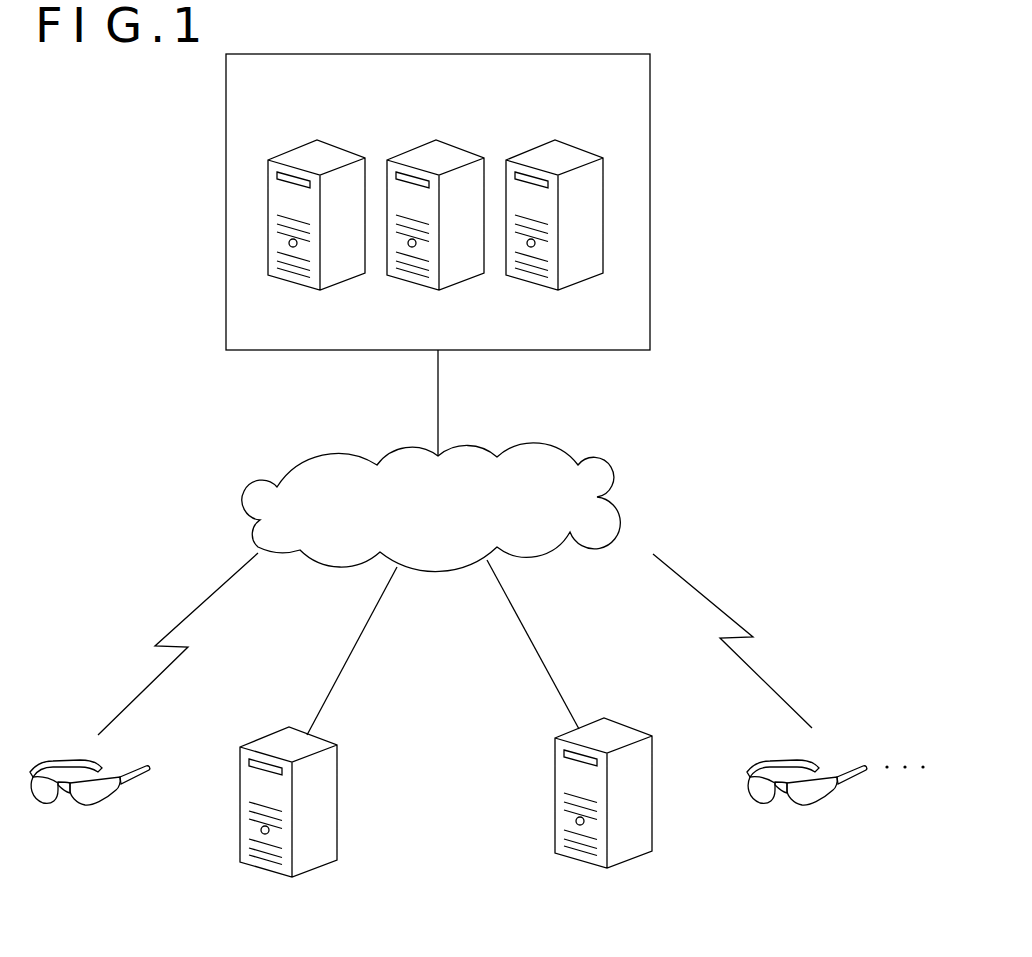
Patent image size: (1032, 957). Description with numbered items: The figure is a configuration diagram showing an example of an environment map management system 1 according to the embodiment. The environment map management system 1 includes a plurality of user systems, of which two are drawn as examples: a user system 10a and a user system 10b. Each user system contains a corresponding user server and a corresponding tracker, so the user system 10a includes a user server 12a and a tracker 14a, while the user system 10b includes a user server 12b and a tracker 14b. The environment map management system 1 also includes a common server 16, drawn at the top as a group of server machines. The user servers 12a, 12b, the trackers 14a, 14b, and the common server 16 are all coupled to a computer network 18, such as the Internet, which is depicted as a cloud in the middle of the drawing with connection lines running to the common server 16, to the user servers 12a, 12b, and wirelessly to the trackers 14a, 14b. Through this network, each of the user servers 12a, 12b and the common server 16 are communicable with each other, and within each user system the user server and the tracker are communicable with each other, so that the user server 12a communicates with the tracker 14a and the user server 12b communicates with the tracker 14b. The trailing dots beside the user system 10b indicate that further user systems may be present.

The environment map management system 1 is at (688, 433).
The common server 16 is at (533, 148).
The computer network 18 is at (542, 443).
The user system 10a is at (30, 893).
The user system 10b is at (567, 893).
The user server 12a is at (258, 738).
The user server 12b is at (619, 725).
The tracker 14a is at (65, 760).
The tracker 14b is at (782, 760).